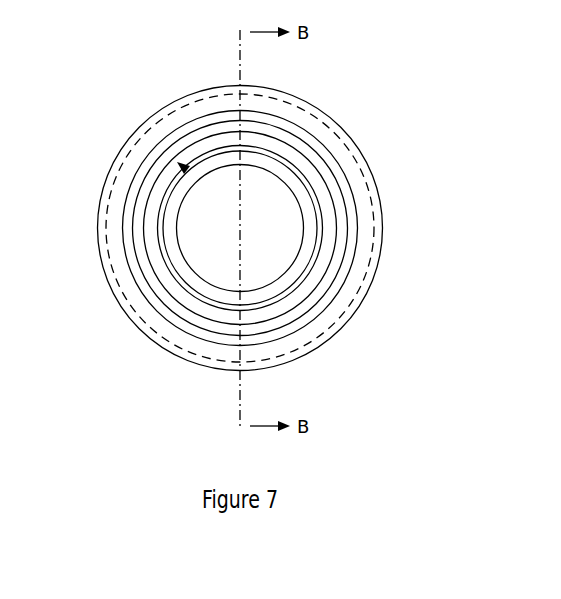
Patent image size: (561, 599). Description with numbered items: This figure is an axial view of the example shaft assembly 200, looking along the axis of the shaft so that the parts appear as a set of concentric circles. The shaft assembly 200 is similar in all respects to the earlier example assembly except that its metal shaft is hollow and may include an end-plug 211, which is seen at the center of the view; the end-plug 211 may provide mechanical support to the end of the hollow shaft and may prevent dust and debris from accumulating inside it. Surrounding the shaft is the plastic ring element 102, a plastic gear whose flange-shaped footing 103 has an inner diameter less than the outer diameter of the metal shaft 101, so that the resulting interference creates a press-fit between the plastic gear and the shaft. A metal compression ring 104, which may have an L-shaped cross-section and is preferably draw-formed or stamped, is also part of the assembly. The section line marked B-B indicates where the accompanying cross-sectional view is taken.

The shaft assembly 200 is at (418, 74).
The flange-shaped footing 103 is at (138, 128).
The plastic ring element 102 is at (375, 175).
The metal compression ring 104 is at (333, 261).
The metal shaft 101 is at (200, 280).
The end-plug 211 is at (225, 236).